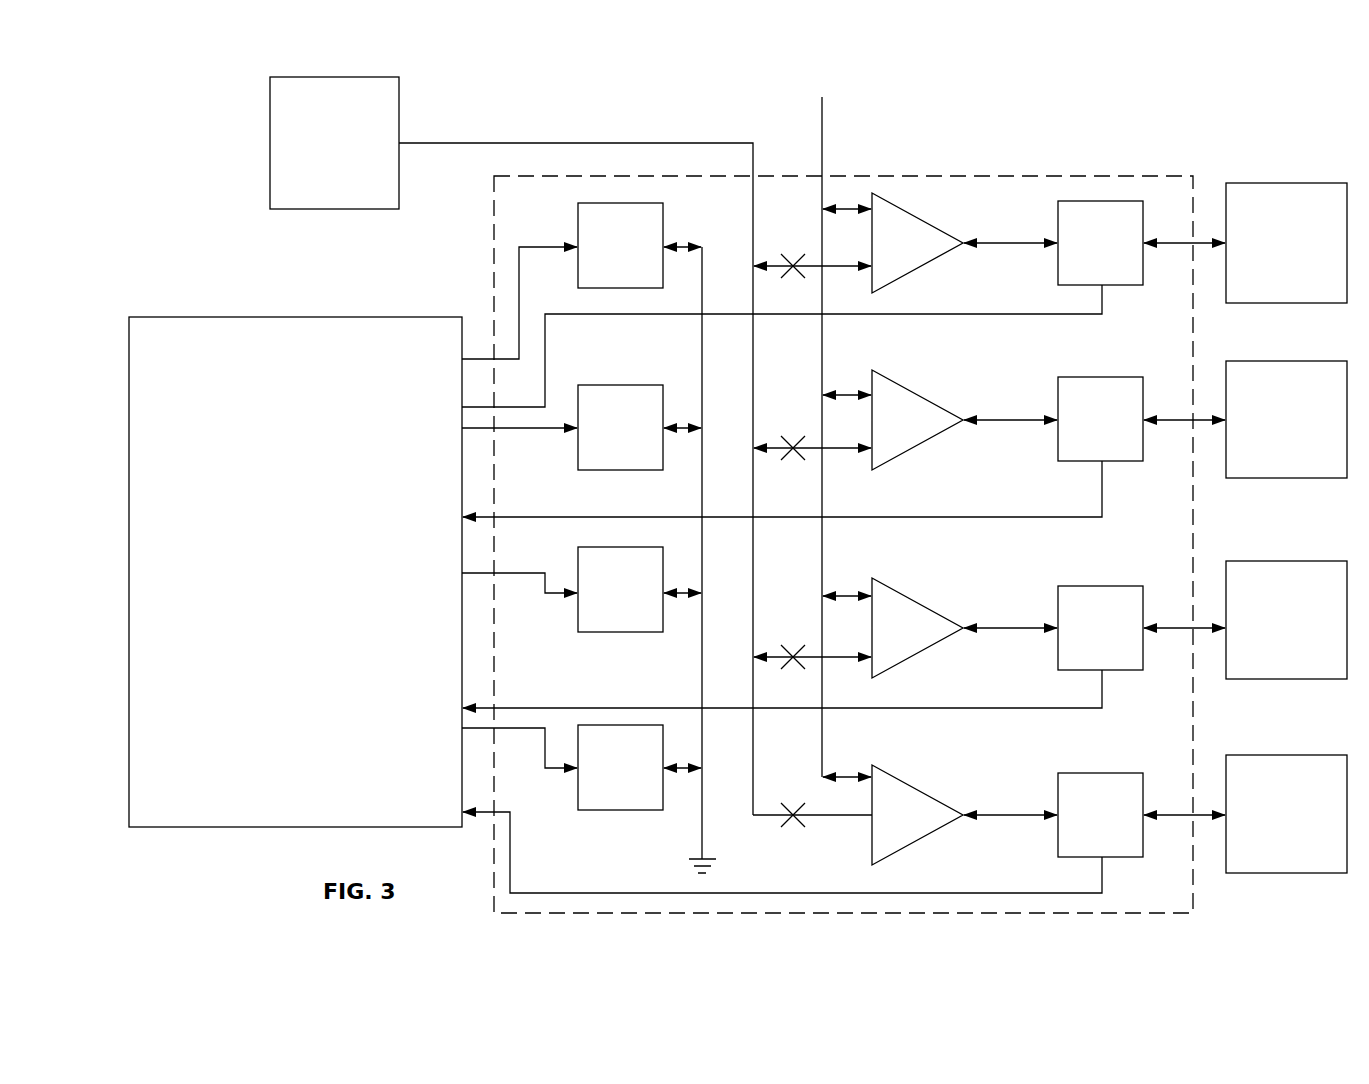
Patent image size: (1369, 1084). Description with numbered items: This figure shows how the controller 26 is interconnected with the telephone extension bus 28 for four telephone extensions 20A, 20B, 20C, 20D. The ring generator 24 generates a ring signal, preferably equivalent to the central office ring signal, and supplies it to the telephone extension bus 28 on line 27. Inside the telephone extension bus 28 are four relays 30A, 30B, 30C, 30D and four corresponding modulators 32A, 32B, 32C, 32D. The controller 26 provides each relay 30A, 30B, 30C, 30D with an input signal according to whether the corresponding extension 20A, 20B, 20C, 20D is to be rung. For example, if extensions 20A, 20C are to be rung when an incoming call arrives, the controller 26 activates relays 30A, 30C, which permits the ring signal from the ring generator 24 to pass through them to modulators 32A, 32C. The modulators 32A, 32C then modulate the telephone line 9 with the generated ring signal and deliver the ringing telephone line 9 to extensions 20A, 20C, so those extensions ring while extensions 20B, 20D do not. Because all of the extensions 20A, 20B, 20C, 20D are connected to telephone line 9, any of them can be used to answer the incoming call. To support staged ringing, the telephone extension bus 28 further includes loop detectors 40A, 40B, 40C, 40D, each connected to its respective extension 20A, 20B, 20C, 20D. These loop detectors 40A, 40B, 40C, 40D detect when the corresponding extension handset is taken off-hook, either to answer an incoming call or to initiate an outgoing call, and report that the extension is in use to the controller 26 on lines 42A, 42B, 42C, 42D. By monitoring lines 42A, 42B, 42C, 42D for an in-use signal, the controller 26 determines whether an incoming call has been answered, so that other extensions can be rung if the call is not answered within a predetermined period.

The telephone line 9 is at (822, 157).
The ring generator 24 is at (313, 210).
The controller 26 is at (153, 318).
The line 27 is at (463, 143).
The telephone extension bus 28 is at (1042, 172).
The extension 20A is at (1250, 181).
The extension 20B is at (1248, 361).
The extension 20C is at (1250, 560).
The extension 20D is at (1255, 755).
The relay 30A is at (598, 288).
The relay 30B is at (605, 470).
The relay 30C is at (618, 632).
The relay 30D is at (618, 810).
The modulator 32A is at (937, 222).
The modulator 32B is at (927, 398).
The modulator 32C is at (907, 595).
The modulator 32D is at (917, 787).
The loop detector 40A is at (1113, 201).
The loop detector 40B is at (1098, 377).
The loop detector 40C is at (1098, 586).
The loop detector 40D is at (1099, 773).
The line 42A is at (1102, 312).
The line 42B is at (1102, 515).
The line 42C is at (1102, 706).
The line 42D is at (1102, 891).